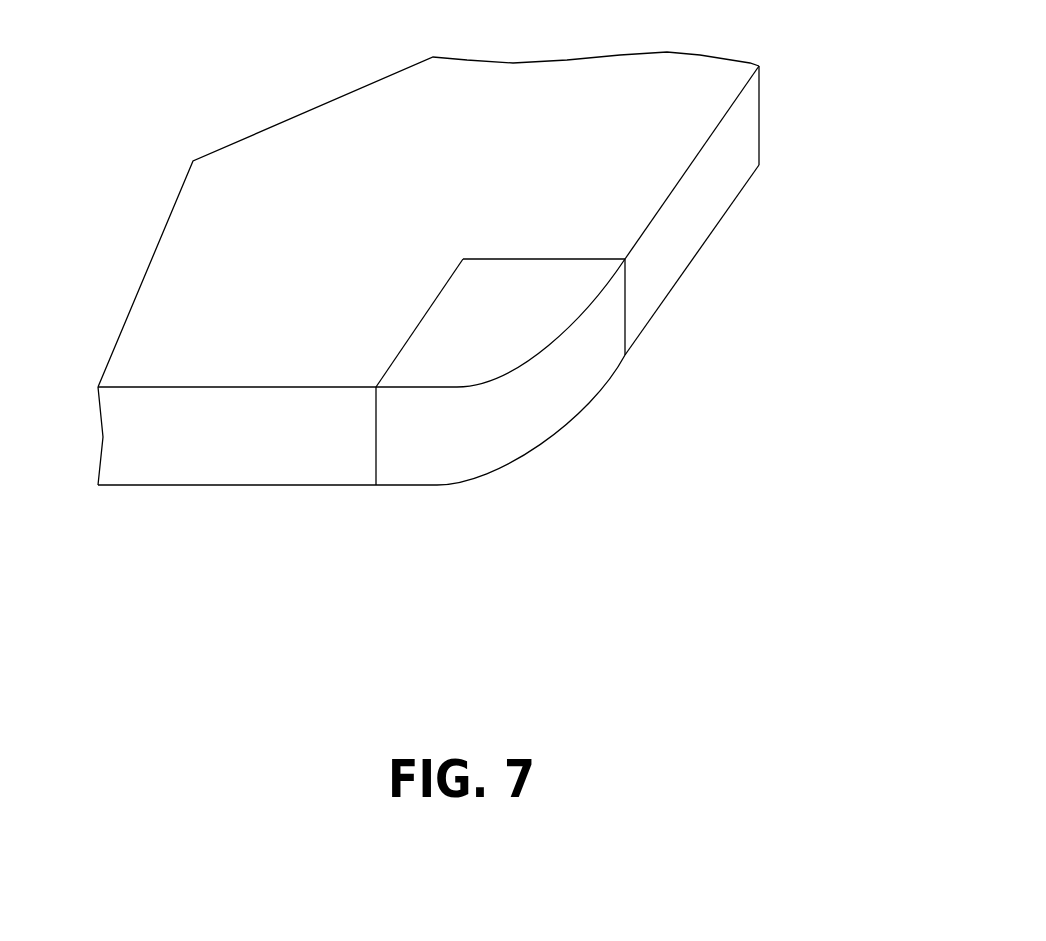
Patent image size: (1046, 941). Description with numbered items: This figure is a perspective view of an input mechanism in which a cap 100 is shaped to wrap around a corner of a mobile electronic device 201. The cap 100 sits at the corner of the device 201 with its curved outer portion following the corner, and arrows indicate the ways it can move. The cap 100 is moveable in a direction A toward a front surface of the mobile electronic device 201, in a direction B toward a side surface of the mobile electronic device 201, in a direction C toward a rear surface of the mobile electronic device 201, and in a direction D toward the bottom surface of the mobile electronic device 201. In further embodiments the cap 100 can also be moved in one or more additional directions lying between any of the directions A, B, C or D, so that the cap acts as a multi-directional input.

The mobile electronic device 201 is at (599, 74).
The cap 100 is at (433, 302).
The direction A is at (504, 280).
The direction B is at (610, 338).
The direction C is at (565, 468).
The direction D is at (420, 469).